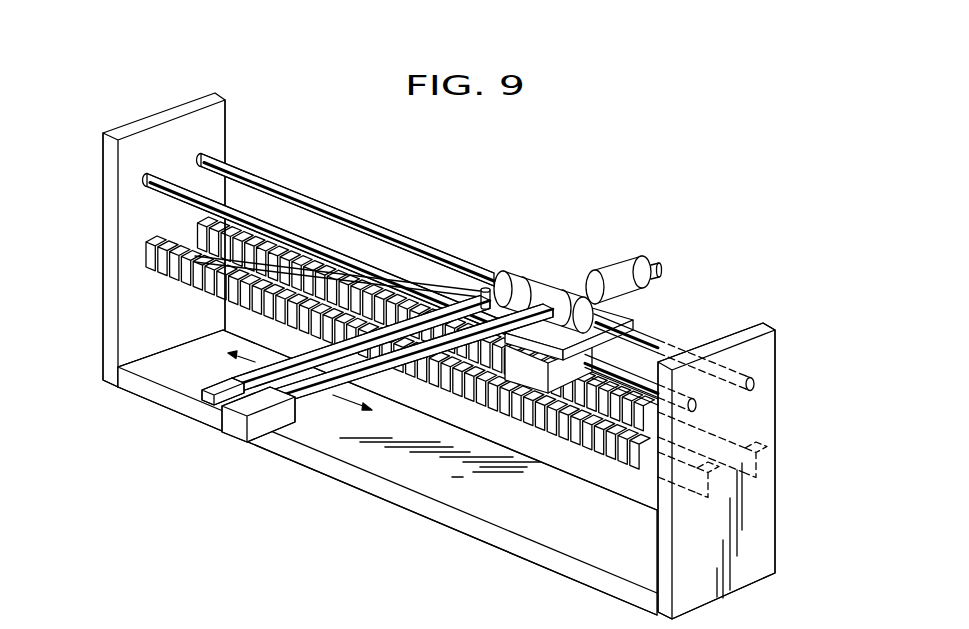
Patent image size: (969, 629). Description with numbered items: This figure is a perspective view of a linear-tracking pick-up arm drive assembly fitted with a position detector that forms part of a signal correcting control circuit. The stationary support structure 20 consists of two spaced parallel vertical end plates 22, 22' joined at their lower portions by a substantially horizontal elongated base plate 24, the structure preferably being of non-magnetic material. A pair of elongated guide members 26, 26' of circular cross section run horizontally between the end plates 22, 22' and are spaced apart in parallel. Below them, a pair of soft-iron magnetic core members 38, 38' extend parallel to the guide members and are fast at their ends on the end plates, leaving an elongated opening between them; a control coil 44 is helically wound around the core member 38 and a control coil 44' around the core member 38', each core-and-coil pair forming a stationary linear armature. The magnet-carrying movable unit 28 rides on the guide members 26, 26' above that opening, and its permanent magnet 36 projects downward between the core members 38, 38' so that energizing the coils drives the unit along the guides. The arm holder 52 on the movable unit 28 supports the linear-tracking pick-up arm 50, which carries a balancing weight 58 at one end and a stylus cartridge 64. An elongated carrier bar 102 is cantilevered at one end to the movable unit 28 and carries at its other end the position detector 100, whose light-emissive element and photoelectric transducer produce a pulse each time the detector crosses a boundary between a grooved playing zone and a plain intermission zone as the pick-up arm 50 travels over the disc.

The stationary support structure 20 is at (436, 356).
The end plate 22 is at (716, 455).
The end plate 22' is at (186, 240).
The base plate 24 is at (452, 528).
The guide member 26 is at (476, 270).
The guide member 26' is at (420, 293).
The magnet-carrying movable unit 28 is at (635, 322).
The permanent magnet 36 is at (600, 380).
The magnetic core member 38 is at (426, 306).
The magnetic core member 38' is at (398, 352).
The control coil 44 is at (483, 329).
The control coil 44' is at (432, 367).
The linear-tracking pick-up arm 50 is at (363, 366).
The arm holder 52 is at (541, 271).
The balancing weight 58 is at (611, 262).
The stylus cartridge 64 is at (236, 441).
The position detector 100 is at (210, 407).
The carrier bar 102 is at (300, 349).